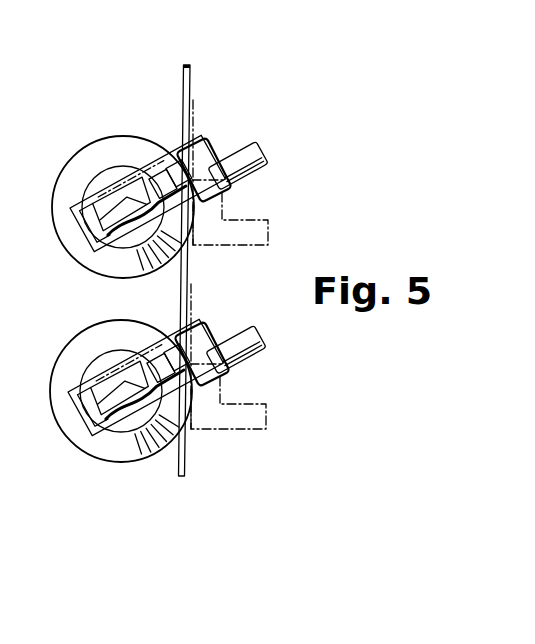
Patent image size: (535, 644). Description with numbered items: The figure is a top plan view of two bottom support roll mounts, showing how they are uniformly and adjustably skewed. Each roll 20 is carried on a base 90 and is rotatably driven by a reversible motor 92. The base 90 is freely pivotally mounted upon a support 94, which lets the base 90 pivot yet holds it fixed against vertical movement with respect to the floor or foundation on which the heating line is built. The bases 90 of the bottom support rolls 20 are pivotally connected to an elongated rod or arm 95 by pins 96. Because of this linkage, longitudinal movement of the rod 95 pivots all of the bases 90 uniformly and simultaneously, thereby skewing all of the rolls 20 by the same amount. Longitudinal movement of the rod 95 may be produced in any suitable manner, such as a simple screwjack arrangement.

The roll 20 is at (113, 246).
The base 90 is at (118, 183).
The reversible motor 92 is at (250, 160).
The support 94 is at (119, 137).
The elongated rod or arm 95 is at (190, 82).
The pin 96 is at (195, 166).